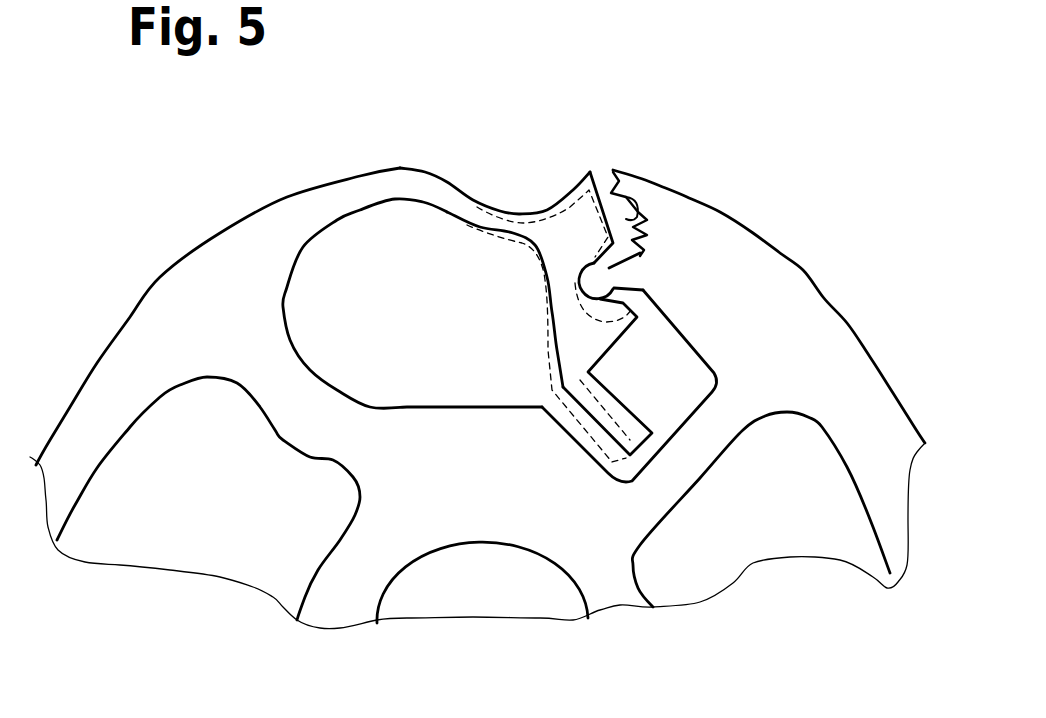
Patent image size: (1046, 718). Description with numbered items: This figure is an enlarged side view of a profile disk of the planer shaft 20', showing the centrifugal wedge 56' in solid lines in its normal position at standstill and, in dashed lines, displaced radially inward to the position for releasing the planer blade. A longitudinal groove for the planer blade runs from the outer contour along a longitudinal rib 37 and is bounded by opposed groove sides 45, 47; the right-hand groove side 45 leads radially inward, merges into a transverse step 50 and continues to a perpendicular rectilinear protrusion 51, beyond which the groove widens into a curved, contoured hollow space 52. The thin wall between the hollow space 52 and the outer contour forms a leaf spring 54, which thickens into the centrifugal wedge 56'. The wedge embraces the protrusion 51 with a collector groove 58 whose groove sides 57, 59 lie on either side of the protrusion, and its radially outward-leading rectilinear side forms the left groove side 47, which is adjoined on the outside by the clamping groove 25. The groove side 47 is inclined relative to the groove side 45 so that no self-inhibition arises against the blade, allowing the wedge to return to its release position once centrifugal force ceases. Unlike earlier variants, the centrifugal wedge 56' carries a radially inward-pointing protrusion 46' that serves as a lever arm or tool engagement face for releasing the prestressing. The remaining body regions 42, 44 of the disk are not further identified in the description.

The hub 20' is at (477, 348).
The clamping groove 25 is at (495, 188).
The longitudinal rib 37 is at (620, 196).
The spoke 42 is at (249, 538).
The spoke 44 is at (786, 533).
The groove side 45 is at (630, 225).
The radially inward-pointing protrusion 46' is at (732, 369).
The groove side 47 is at (621, 211).
The transverse step 50 is at (630, 257).
The protrusion 51 is at (627, 277).
The hollow space 52 is at (430, 391).
The leaf spring 54 is at (450, 200).
The centrifugal wedge 56' is at (549, 286).
The groove side 57 is at (563, 238).
The collector groove 58 is at (579, 277).
The groove side 59 is at (640, 293).